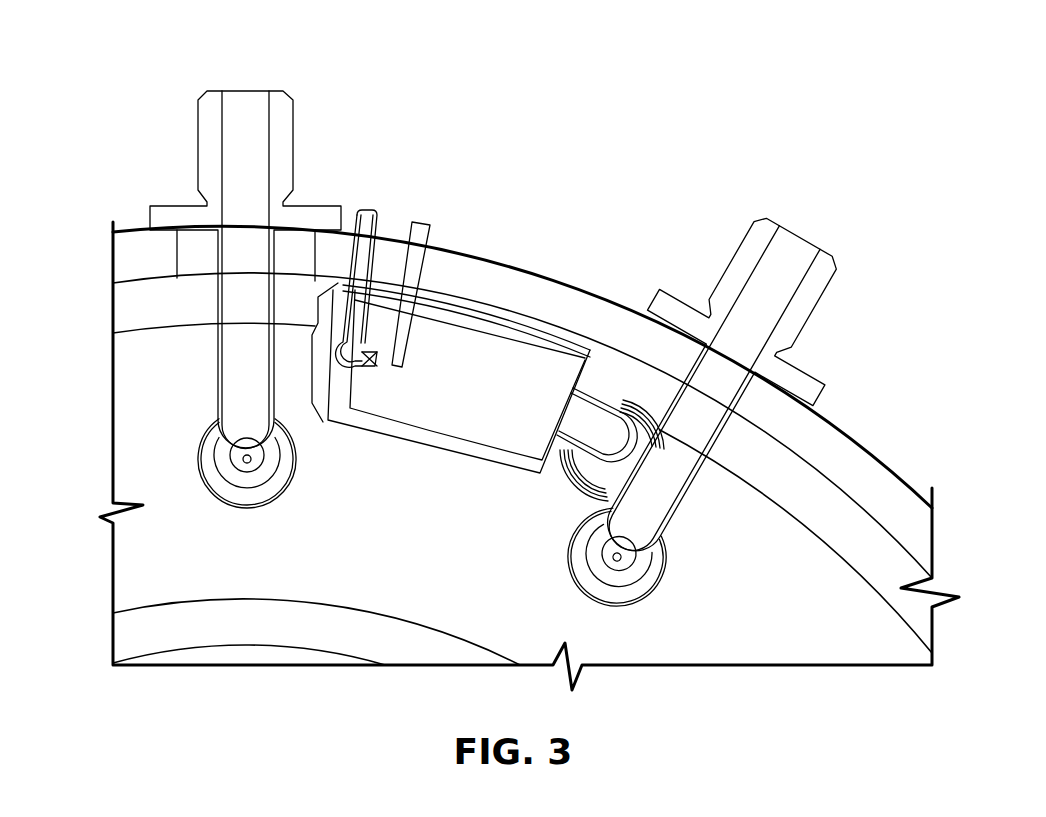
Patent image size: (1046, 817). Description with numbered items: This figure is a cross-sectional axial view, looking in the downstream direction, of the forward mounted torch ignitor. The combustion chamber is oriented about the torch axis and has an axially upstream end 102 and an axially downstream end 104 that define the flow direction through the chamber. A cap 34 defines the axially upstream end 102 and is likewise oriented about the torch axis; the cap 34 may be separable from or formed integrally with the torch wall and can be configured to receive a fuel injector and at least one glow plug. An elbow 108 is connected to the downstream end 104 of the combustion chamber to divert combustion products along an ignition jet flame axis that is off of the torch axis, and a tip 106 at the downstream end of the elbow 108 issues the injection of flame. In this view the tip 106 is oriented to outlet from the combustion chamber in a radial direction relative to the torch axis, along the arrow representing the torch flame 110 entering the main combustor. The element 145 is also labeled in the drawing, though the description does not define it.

The cap 34 is at (305, 351).
The bolt 145 is at (214, 102).
The axially upstream end 102 is at (378, 296).
The axially downstream end 104 is at (588, 354).
The tip 106 is at (646, 415).
The elbow 108 is at (599, 418).
The torch flame 110 is at (571, 411).